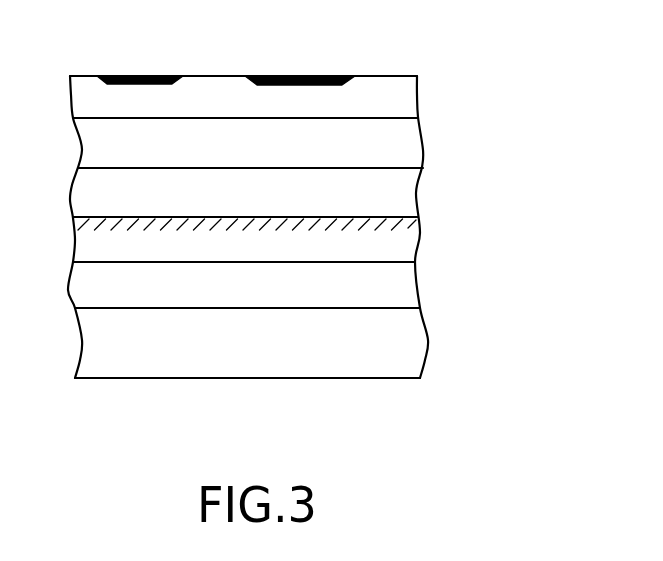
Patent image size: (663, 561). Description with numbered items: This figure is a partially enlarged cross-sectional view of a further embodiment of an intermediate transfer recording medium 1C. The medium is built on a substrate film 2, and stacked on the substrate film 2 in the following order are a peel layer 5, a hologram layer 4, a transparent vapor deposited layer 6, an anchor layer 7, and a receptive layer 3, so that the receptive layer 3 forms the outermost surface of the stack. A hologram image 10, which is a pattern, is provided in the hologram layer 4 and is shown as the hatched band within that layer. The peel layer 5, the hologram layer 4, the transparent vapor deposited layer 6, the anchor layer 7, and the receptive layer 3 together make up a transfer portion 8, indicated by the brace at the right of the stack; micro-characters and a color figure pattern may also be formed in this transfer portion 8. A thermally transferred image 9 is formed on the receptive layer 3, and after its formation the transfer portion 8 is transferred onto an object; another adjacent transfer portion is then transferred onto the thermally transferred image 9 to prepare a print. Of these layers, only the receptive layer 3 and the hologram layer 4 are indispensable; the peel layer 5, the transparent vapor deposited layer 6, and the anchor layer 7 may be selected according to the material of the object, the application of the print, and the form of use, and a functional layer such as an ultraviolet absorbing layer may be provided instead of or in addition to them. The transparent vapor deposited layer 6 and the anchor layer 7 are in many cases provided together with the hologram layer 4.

The intermediate transfer recording medium 1C is at (241, 57).
The substrate film 2 is at (402, 348).
The receptive layer 3 is at (402, 99).
The hologram layer 4 is at (402, 244).
The peel layer 5 is at (402, 289).
The transparent vapor deposited layer 6 is at (402, 196).
The anchor layer 7 is at (402, 148).
The transfer portion 8 is at (487, 73).
The thermally transferred image 9 is at (322, 76).
The hologram image 10 is at (172, 228).